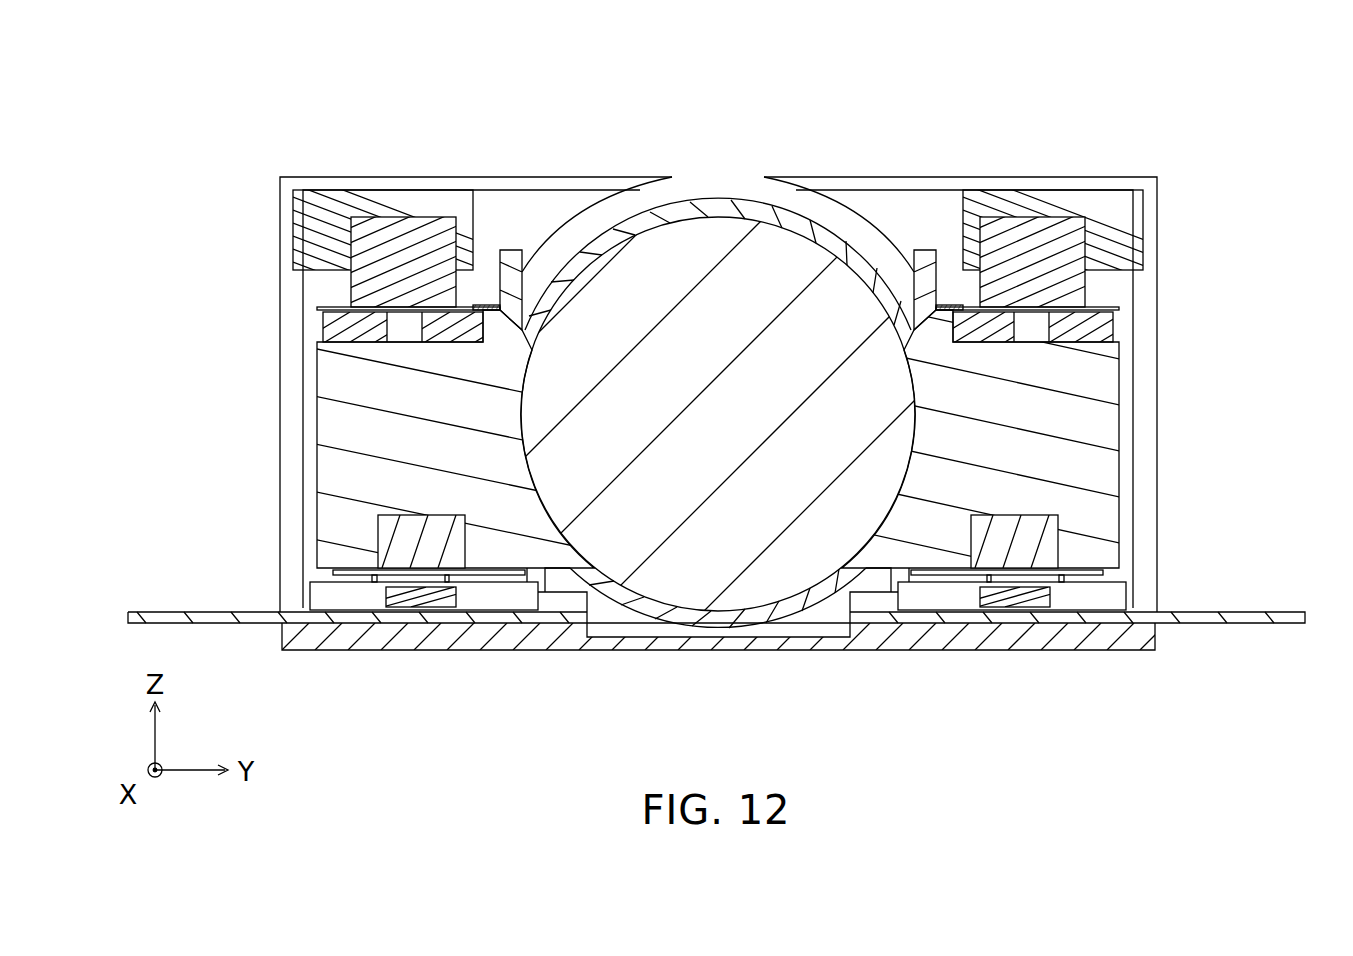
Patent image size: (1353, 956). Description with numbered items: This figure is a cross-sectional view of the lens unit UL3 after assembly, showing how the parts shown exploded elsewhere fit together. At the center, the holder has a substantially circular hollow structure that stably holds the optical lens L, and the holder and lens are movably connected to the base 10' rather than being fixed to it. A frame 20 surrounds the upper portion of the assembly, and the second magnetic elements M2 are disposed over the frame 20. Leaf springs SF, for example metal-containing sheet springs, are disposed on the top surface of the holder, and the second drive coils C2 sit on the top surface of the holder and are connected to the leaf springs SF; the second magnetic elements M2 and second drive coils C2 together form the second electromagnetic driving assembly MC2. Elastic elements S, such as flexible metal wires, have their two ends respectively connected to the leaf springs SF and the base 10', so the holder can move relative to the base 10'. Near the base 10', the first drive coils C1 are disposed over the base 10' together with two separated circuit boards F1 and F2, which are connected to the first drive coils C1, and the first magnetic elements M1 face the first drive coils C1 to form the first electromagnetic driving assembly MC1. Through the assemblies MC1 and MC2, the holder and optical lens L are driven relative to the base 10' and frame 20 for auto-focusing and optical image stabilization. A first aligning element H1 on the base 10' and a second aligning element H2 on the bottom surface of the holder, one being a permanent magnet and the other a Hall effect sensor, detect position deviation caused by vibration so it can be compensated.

The lens unit UL3 is at (183, 139).
The frame 20 is at (325, 213).
The second magnetic element M2 is at (403, 260).
The leaf spring SF is at (490, 305).
The optical lens L is at (718, 318).
The first electromagnetic driving assembly MC1 is at (1285, 95).
The first magnetic element M1 is at (503, 573).
The first drive coil C1 is at (485, 598).
The second electromagnetic driving assembly MC2 is at (1285, 185).
The second drive coil C2 is at (452, 335).
The circuit board F2 is at (157, 620).
The second aligning element H2 is at (410, 541).
The circuit board F1 is at (1281, 620).
The elastic element S is at (373, 578).
The first aligning element H1 is at (421, 600).
The base 10' is at (724, 674).